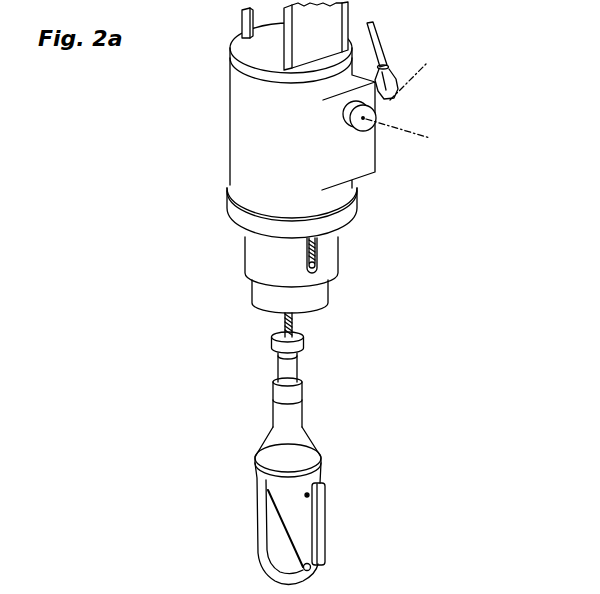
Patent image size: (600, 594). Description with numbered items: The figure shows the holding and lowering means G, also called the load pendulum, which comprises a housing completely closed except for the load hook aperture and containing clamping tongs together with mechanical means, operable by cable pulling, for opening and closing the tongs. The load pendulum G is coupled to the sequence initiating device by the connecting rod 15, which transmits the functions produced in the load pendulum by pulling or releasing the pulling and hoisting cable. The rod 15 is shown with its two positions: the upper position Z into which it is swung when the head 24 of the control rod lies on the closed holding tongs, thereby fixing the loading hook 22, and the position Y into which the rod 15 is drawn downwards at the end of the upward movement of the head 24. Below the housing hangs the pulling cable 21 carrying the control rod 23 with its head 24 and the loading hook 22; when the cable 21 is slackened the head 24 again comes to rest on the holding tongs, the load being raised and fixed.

The connecting rod 15 is at (375, 40).
The upper position z is at (415, 78).
The lower position y is at (403, 134).
The holding and lowering means G is at (320, 198).
The pulling cable 21 is at (293, 320).
The head of the control rod 24 is at (305, 339).
The control rod 23 is at (299, 388).
The loading hook 22 is at (308, 442).